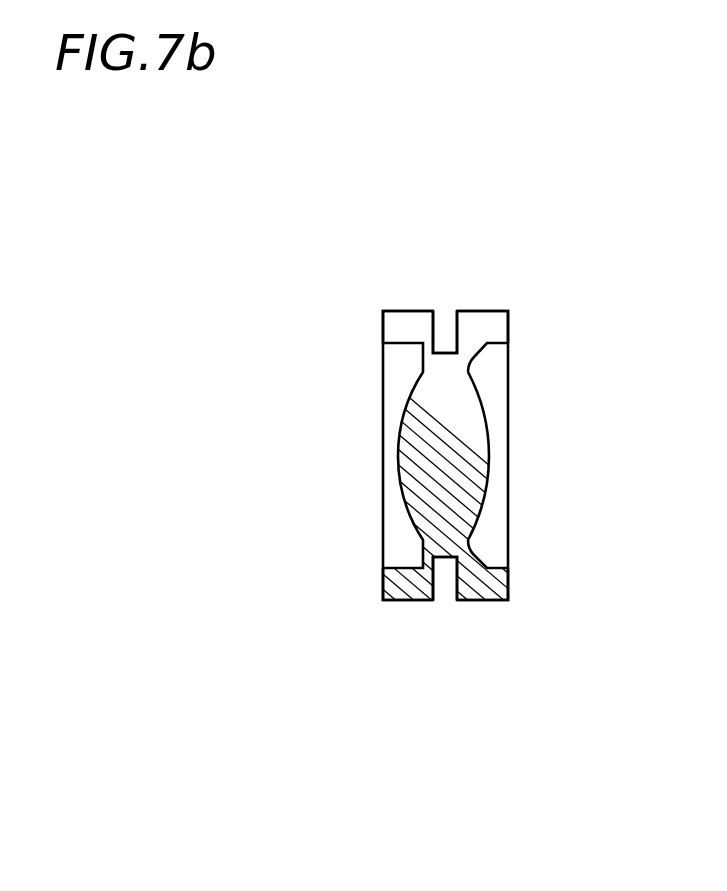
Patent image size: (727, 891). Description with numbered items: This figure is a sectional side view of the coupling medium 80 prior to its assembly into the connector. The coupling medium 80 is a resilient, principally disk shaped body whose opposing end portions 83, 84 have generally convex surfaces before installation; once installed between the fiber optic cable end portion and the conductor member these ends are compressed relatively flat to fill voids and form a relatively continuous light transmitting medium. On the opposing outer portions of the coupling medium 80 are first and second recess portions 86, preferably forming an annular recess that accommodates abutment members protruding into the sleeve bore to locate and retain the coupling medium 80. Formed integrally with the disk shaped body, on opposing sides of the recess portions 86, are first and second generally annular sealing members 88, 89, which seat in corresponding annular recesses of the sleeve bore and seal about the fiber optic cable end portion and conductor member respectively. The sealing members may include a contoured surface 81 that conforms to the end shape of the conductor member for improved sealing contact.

The coupling medium 80 is at (237, 350).
The contoured surface 81 is at (487, 346).
The opposing end portion 83 is at (399, 445).
The opposing end portion 84 is at (489, 447).
The recess portion 86 is at (445, 322).
The first annular sealing member 88 is at (402, 311).
The second annular sealing member 89 is at (473, 311).